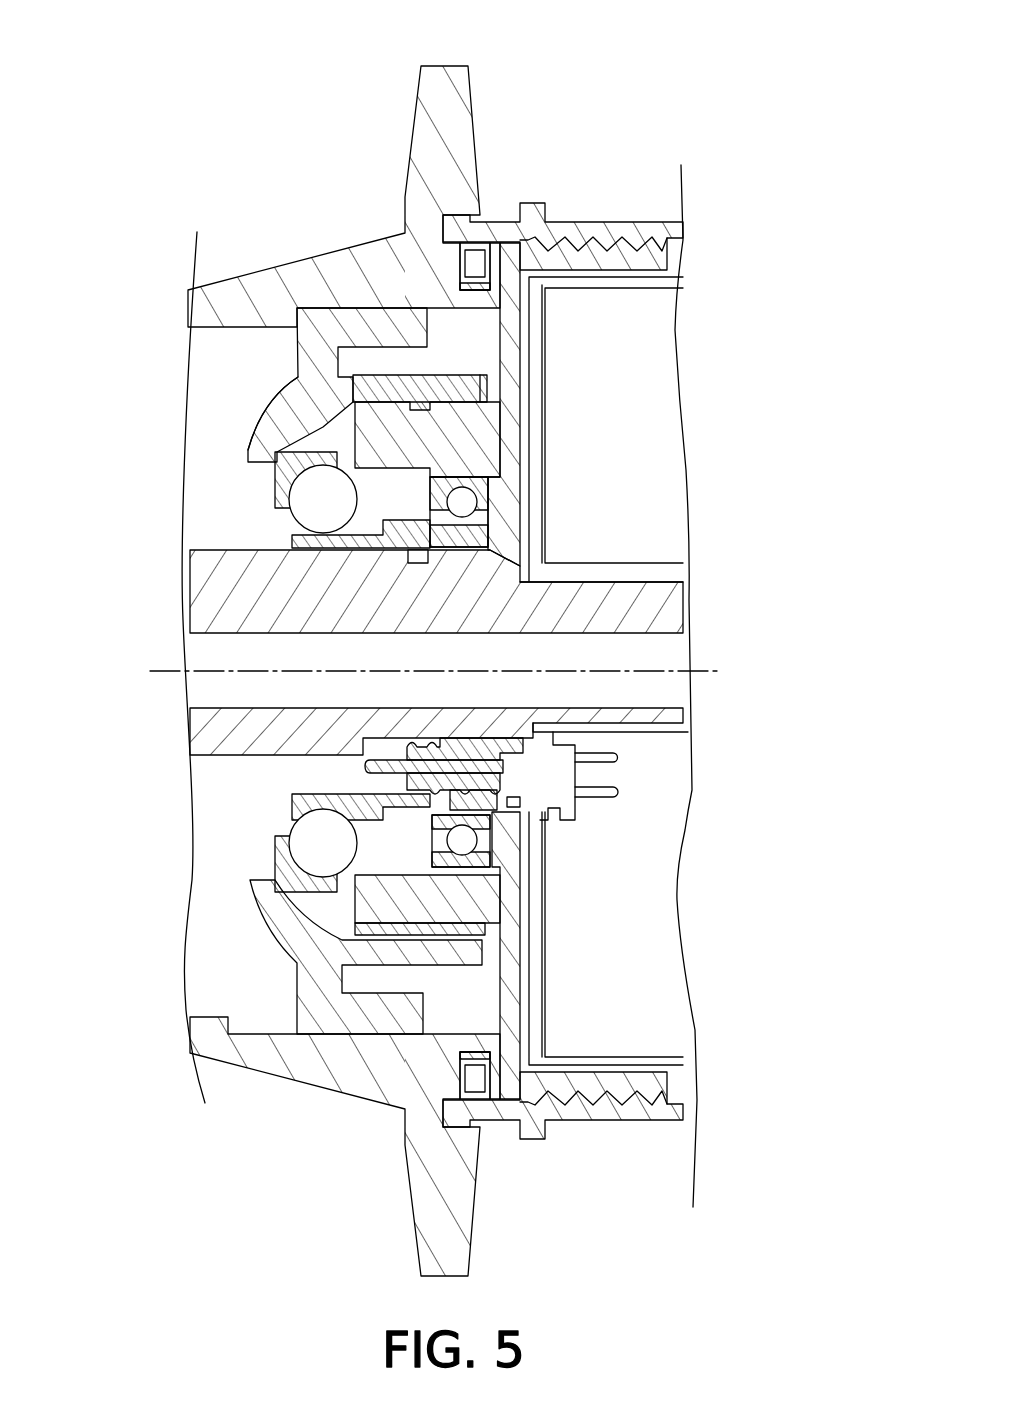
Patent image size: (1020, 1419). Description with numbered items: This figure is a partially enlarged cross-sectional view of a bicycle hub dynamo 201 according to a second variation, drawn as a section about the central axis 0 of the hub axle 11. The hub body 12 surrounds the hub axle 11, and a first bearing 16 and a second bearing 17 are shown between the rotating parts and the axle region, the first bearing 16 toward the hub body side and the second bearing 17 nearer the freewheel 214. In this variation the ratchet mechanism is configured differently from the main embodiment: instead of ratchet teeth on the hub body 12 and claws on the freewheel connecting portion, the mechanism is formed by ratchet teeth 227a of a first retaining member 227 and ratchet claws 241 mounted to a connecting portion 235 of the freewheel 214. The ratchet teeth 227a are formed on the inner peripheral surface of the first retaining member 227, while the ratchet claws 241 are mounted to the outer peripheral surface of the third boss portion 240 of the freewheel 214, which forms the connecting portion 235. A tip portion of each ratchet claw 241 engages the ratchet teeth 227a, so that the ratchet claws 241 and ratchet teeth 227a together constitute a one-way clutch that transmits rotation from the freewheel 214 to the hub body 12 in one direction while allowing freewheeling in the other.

The dynamo 201 is at (720, 74).
The freewheel 214 is at (575, 183).
The hub body 12 is at (235, 237).
The ratchet claws 241 is at (420, 428).
The connecting portion 235 is at (532, 433).
The third boss portion 240 is at (470, 455).
The first retaining member 227 is at (262, 385).
The ratchet teeth 227a is at (265, 420).
The hub axle 11 is at (230, 623).
The central axis 0 is at (435, 672).
The first bearing 16 is at (245, 837).
The second bearing 17 is at (511, 832).